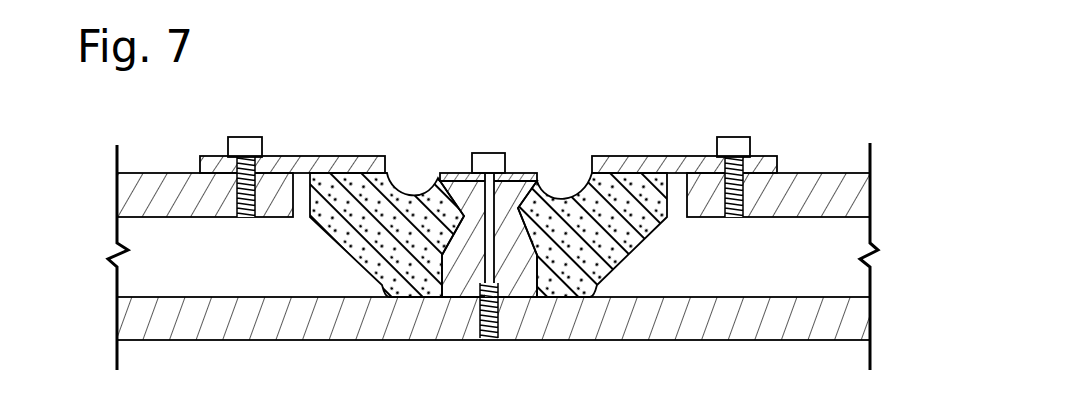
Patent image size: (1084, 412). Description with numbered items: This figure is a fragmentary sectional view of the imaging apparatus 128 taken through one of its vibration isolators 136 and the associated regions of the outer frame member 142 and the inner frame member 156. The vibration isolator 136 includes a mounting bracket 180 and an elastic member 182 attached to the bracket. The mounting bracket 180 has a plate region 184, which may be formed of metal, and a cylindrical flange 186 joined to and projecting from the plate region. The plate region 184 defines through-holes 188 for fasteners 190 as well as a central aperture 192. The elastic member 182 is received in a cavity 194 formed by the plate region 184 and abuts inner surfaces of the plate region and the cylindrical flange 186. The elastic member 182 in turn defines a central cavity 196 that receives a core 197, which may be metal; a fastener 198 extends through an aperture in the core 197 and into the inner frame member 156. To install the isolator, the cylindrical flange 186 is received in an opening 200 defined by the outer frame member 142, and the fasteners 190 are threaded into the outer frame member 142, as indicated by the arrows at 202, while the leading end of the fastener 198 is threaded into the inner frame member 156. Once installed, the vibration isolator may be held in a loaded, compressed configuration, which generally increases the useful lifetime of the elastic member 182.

The imaging apparatus 128 is at (268, 72).
The vibration isolator 136 is at (407, 147).
The outer frame member 142 is at (152, 173).
The inner frame member 156 is at (193, 297).
The mounting bracket 180 is at (619, 153).
The elastic member 182 is at (603, 271).
The plate region 184 is at (647, 157).
The cylindrical flange 186 is at (674, 220).
The through-hole 188 is at (243, 182).
The fastener 190 is at (246, 137).
The central aperture 192 is at (590, 172).
The cavity 194 is at (312, 198).
The central cavity 196 is at (465, 223).
The core 197 is at (508, 302).
The fastener 198 is at (487, 152).
The opening 200 is at (672, 190).
The arrows 202 is at (226, 201).